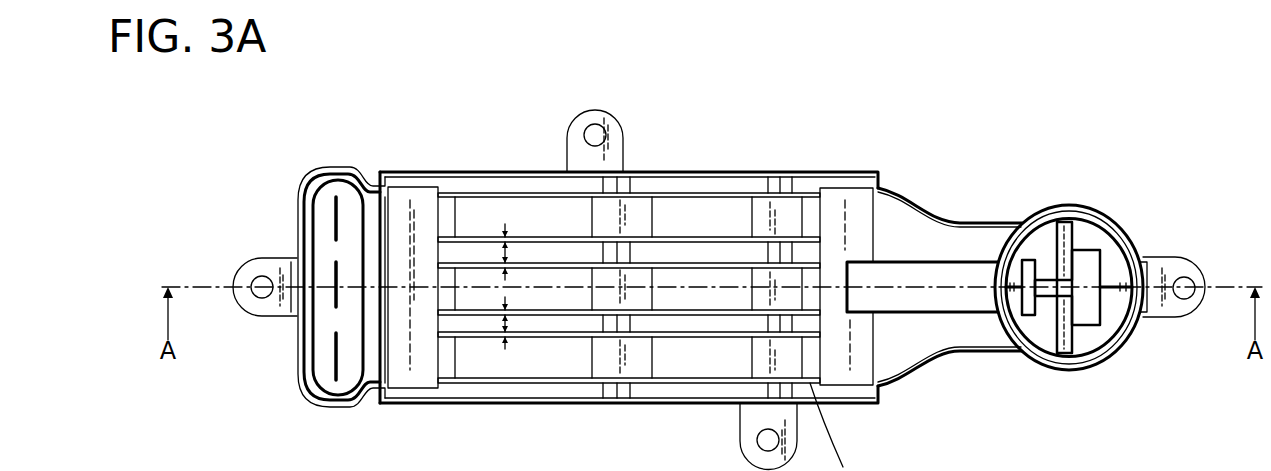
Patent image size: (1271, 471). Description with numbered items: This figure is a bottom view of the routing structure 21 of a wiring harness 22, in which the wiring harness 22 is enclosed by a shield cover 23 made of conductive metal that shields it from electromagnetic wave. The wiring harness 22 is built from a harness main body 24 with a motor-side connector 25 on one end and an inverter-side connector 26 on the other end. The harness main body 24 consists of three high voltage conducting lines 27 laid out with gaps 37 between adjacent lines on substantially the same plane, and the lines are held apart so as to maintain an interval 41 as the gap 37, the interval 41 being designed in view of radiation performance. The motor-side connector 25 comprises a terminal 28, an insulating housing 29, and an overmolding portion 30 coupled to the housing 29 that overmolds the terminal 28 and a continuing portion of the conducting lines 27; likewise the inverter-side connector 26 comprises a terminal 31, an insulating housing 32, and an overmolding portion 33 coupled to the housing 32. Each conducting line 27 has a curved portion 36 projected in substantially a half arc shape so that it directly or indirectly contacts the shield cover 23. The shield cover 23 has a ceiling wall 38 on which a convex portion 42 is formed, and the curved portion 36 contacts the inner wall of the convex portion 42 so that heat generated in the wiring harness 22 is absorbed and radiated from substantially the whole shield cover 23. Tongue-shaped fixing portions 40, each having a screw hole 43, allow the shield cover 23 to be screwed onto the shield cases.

The routing structure 21 is at (997, 238).
The wiring harness 22 is at (959, 241).
The shield cover 23 is at (1020, 131).
The harness main body 24 is at (698, 210).
The motor-side connector 25 is at (317, 250).
The inverter-side connector 26 is at (1112, 268).
The high voltage conducting line 27 is at (668, 210).
The terminal 28 is at (297, 365).
The housing 29 is at (336, 350).
The overmolding portion 30 is at (417, 367).
The terminal 31 is at (1067, 333).
The housing 32 is at (1040, 327).
The overmolding portion 33 is at (915, 360).
The curved portion 36 is at (728, 205).
The gap 37 is at (547, 248).
The ceiling wall 38 is at (807, 387).
The fixing portion 40 is at (250, 265).
The interval 41 is at (503, 323).
The convex portion 42 is at (682, 387).
The screw hole 43 is at (263, 297).